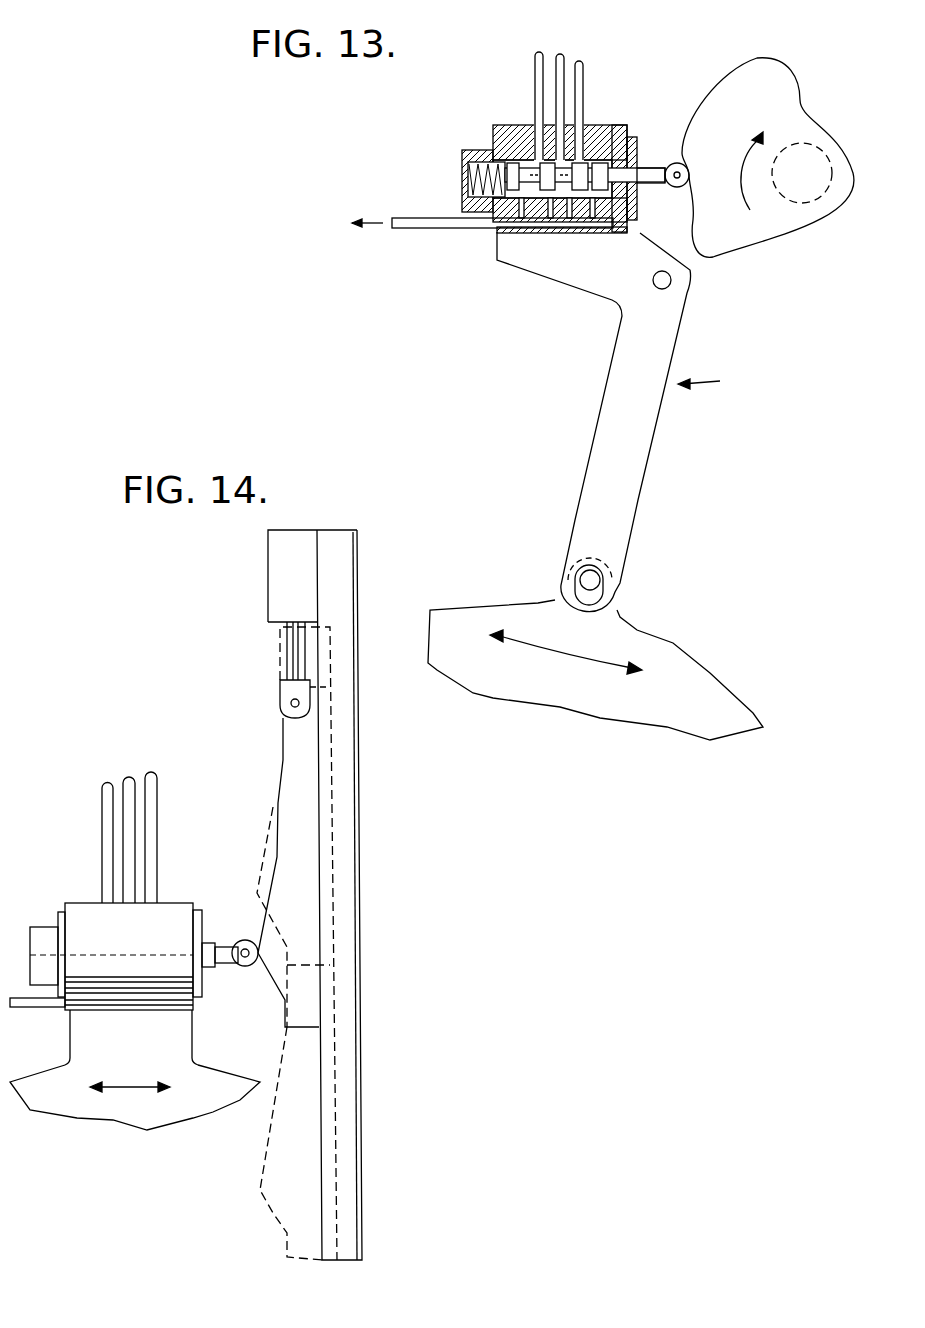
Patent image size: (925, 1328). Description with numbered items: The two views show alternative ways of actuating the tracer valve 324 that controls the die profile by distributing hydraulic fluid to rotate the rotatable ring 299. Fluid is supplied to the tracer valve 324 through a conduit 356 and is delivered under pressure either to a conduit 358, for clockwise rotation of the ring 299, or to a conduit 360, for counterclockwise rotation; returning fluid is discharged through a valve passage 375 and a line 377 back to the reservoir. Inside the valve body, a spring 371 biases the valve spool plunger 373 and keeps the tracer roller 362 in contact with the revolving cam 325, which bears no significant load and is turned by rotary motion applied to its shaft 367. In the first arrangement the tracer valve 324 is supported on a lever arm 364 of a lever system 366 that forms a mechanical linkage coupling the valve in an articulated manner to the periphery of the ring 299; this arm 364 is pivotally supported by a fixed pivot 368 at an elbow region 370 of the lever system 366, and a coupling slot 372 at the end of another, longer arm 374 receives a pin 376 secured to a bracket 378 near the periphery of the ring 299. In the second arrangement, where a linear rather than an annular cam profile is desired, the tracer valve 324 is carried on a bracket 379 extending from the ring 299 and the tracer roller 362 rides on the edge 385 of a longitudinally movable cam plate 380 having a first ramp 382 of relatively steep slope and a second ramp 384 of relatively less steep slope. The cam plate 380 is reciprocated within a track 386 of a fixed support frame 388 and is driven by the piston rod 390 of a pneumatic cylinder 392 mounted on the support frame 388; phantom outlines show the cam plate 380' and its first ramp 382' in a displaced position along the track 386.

In FIG. 13, the rotatable ring 299 is at (491, 610).
In FIG. 14, the rotatable ring 299 is at (235, 1060).
In FIG. 13, the tracer valve 324 is at (514, 125).
In FIG. 14, the tracer valve 324 is at (90, 903).
In FIG. 13, the cam 325 is at (727, 70).
In FIG. 13, the conduit 356 is at (562, 56).
In FIG. 14, the conduit 356 is at (128, 780).
In FIG. 13, the conduit 358 is at (583, 64).
In FIG. 14, the conduit 358 is at (153, 783).
In FIG. 13, the conduit 360 is at (536, 58).
In FIG. 14, the conduit 360 is at (106, 785).
In FIG. 13, the tracer roller 362 is at (670, 163).
In FIG. 14, the tracer roller 362 is at (250, 968).
In FIG. 13, the lever arm 364 is at (577, 288).
In FIG. 13, the lever system 366 is at (628, 422).
In FIG. 13, the shaft 367 is at (808, 150).
In FIG. 13, the fixed pivot 368 is at (672, 282).
In FIG. 13, the elbow region 370 is at (688, 308).
In FIG. 13, the spring 371 is at (463, 170).
In FIG. 13, the coupling slot 372 is at (607, 565).
In FIG. 13, the valve spool plunger 373 is at (512, 160).
In FIG. 13, the longer arm 374 is at (640, 496).
In FIG. 13, the valve passage 375 is at (548, 233).
In FIG. 13, the pin 376 is at (582, 578).
In FIG. 13, the line 377 is at (435, 218).
In FIG. 14, the line 377 is at (20, 1008).
In FIG. 13, the bracket 378 is at (617, 612).
In FIG. 14, the bracket 379 is at (80, 1051).
In FIG. 14, the cam plate 380 is at (270, 853).
In FIG. 14, the cam arm (alternate position) 380' is at (248, 1243).
In FIG. 14, the first ramp 382 is at (273, 918).
In FIG. 14, the cam surface (alternate position) 382' is at (263, 1143).
In FIG. 14, the second ramp 384 is at (283, 836).
In FIG. 14, the edge 385 is at (278, 862).
In FIG. 14, the track 386 is at (332, 766).
In FIG. 14, the support frame 388 is at (358, 716).
In FIG. 14, the piston rod 390 is at (292, 655).
In FIG. 14, the pneumatic cylinder 392 is at (286, 530).